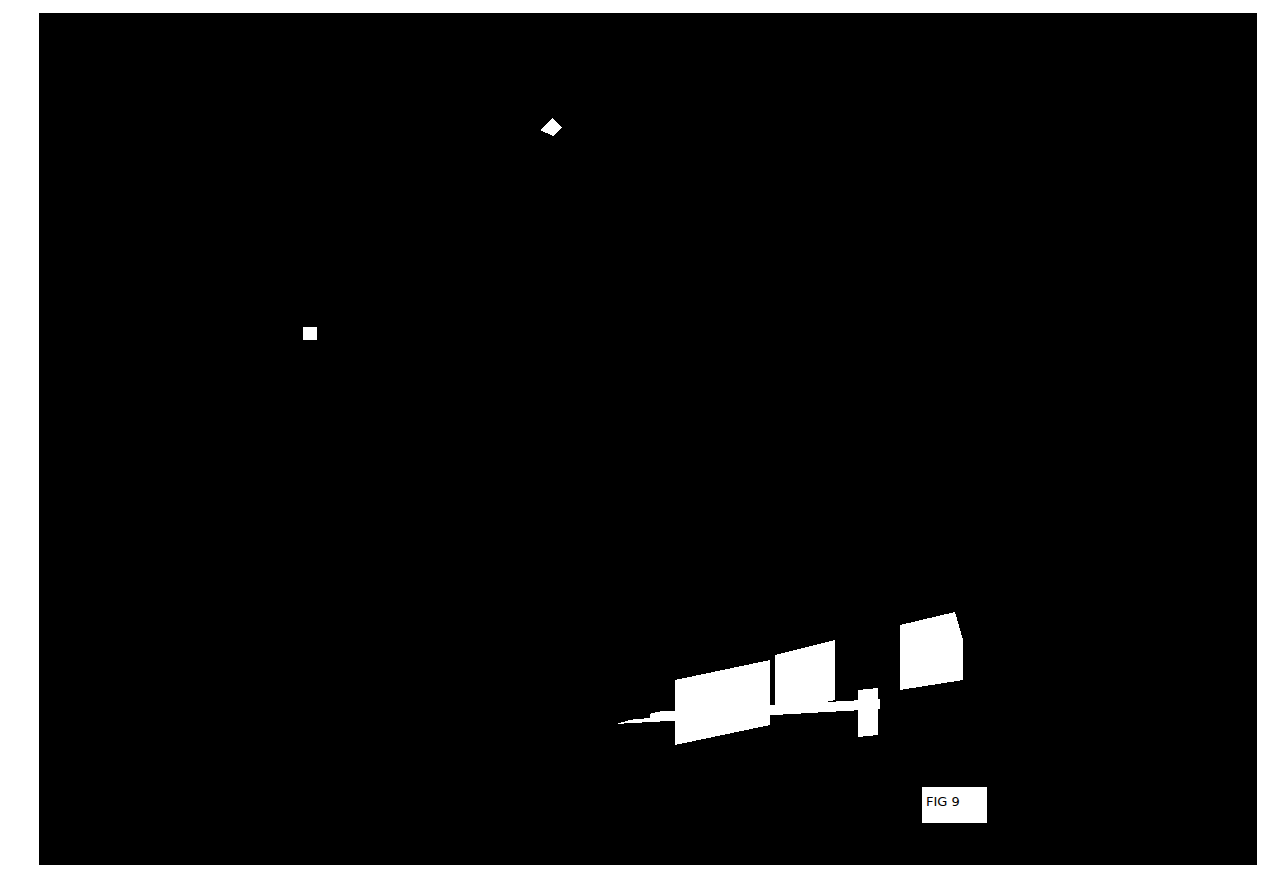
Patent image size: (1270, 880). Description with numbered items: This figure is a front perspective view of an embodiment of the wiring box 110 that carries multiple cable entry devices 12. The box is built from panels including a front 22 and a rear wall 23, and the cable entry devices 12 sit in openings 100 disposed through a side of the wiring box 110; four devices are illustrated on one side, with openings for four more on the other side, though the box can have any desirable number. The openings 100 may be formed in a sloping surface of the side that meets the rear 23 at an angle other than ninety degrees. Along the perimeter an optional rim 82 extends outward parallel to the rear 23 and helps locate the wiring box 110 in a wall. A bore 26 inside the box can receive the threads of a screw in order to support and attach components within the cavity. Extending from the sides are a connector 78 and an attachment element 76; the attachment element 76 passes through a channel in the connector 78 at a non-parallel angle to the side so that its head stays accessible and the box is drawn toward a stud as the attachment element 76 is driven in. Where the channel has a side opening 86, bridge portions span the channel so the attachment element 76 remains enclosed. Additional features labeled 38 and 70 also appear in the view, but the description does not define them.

The front 22 is at (337, 212).
The bore 26 is at (690, 128).
The cable entry device 12 is at (745, 300).
The connector 78 is at (300, 288).
The attachment element 76 is at (312, 337).
The wiring box 110 is at (322, 523).
The rear wall 23 is at (690, 465).
The rim 82 is at (892, 503).
The connector 38 is at (612, 684).
The opening 100 is at (865, 648).
The opening 86 is at (475, 755).
The conduit 70 is at (790, 730).